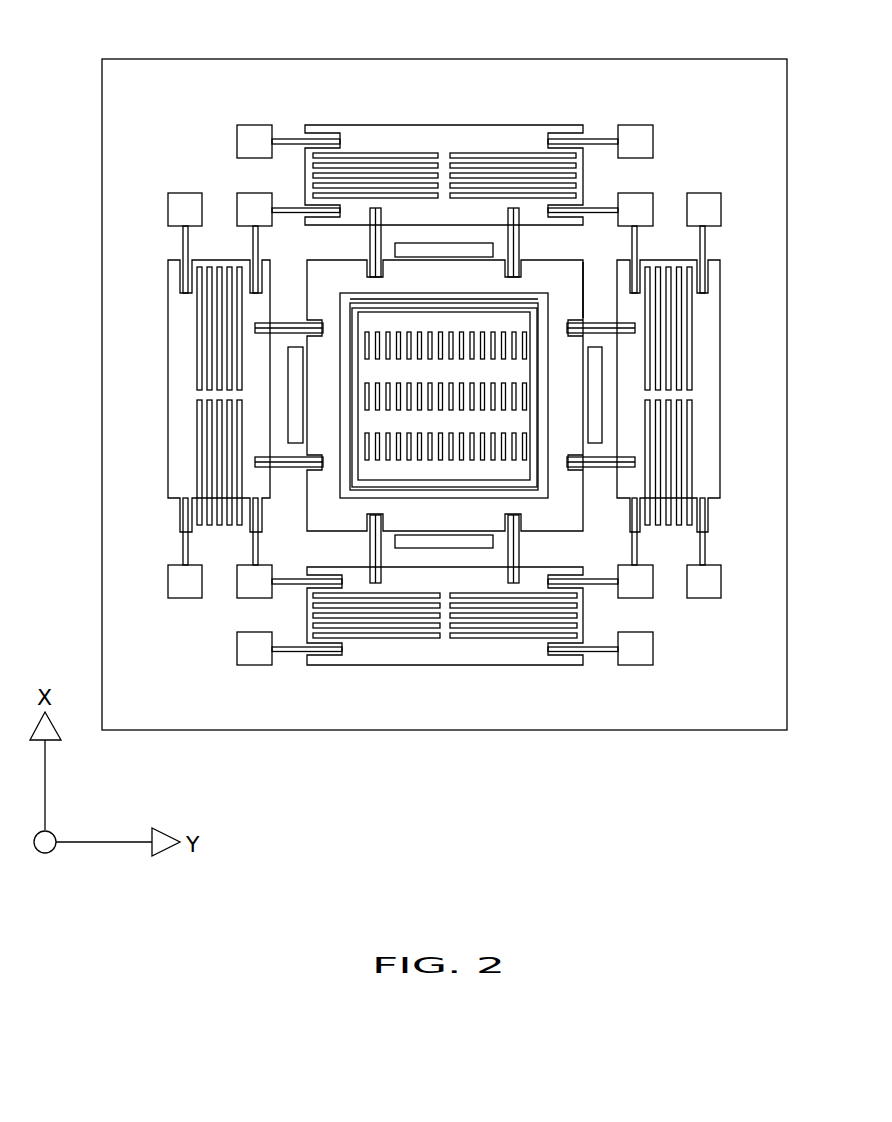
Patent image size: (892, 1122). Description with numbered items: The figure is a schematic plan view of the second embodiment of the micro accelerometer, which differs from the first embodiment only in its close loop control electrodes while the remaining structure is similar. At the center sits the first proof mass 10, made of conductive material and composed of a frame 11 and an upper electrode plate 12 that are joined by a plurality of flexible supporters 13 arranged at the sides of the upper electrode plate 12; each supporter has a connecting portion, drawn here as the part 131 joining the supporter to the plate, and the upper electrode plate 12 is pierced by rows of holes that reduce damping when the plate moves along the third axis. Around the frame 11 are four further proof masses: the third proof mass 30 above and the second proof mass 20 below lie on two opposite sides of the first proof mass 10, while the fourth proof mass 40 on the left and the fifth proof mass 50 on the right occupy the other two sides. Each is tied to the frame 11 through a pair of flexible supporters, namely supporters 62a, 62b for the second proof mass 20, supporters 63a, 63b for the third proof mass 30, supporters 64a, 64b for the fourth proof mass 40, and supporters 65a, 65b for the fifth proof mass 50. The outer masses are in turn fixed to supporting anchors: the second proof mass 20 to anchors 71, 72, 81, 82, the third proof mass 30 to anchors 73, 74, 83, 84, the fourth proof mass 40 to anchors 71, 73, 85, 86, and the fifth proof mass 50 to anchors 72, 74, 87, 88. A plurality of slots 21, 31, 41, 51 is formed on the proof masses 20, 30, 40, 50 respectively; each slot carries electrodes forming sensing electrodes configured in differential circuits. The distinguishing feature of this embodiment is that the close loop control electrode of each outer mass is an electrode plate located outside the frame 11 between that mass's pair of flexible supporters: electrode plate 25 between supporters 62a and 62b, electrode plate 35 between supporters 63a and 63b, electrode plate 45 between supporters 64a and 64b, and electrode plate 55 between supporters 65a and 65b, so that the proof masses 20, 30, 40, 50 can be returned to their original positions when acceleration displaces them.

The first proof mass 10 is at (307, 516).
The frame 11 is at (572, 310).
The upper electrode plate 12 is at (395, 473).
The flexible supporters 13 is at (393, 298).
The inner frame beam 131 is at (530, 300).
The second proof mass 20 is at (505, 666).
The slots 21 is at (398, 616).
The electrode plate 25 is at (445, 549).
The third proof mass 30 is at (483, 124).
The slots 31 is at (382, 165).
The electrode plate 35 is at (455, 243).
The fourth proof mass 40 is at (166, 402).
The slots 41 is at (210, 280).
The electrode plate 45 is at (288, 382).
The fifth proof mass 50 is at (722, 497).
The slots 51 is at (678, 368).
The electrode plate 55 is at (602, 415).
The flexible supporter 62a is at (370, 549).
The flexible supporter 62b is at (519, 549).
The flexible supporter 63a is at (370, 244).
The flexible supporter 63b is at (519, 244).
The flexible supporter 64a is at (283, 328).
The flexible supporter 64b is at (283, 465).
The flexible supporter 65a is at (600, 327).
The flexible supporter 65b is at (600, 465).
The supporting anchor 71 is at (237, 585).
The supporting anchor 72 is at (653, 585).
The supporting anchor 73 is at (237, 205).
The supporting anchor 74 is at (653, 205).
The supporting anchor 81 is at (258, 665).
The supporting anchor 82 is at (634, 665).
The supporting anchor 83 is at (252, 130).
The supporting anchor 84 is at (633, 130).
The supporting anchor 85 is at (183, 583).
The supporting anchor 86 is at (183, 212).
The supporting anchor 87 is at (712, 583).
The supporting anchor 88 is at (712, 212).